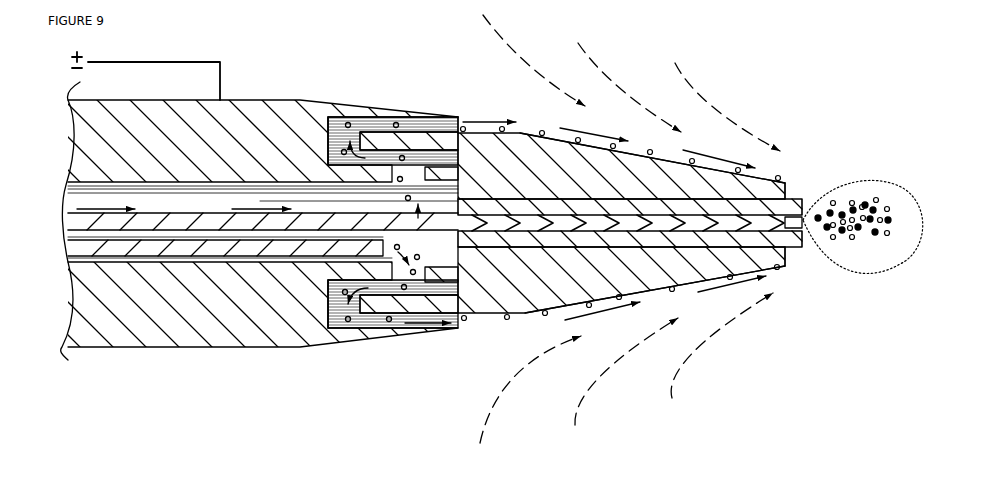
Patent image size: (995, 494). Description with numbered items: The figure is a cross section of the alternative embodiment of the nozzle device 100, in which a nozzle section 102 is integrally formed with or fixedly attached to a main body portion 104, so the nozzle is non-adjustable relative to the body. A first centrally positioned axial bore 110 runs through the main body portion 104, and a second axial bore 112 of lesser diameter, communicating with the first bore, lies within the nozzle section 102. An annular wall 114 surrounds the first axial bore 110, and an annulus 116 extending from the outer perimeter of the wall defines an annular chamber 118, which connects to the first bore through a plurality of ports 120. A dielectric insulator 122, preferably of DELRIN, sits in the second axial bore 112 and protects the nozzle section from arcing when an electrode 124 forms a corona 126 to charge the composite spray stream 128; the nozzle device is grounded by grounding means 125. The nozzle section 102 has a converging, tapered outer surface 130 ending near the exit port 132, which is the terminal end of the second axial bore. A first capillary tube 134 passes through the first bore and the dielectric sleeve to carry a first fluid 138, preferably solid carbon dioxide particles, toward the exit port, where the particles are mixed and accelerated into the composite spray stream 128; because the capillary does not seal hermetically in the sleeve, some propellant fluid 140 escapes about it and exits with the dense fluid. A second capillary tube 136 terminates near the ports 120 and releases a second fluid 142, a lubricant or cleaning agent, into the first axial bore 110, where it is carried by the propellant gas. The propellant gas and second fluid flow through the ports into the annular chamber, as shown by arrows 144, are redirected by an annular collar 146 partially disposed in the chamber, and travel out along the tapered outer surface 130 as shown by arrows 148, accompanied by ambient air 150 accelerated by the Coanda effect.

The nozzle device 100 is at (281, 68).
The nozzle section 102 is at (557, 134).
The main body portion 104 is at (217, 350).
The first axial bore 110 is at (66, 192).
The second axial bore 112 is at (676, 205).
The annular wall 114 is at (298, 98).
The annulus 116 is at (405, 111).
The annular chamber 118 is at (335, 150).
The ports 120 is at (412, 173).
The dielectric insulator 122 is at (802, 198).
The electrode 124 is at (795, 232).
The grounding means 125 is at (147, 62).
The corona 126 is at (885, 272).
The composite spray stream 128 is at (863, 195).
The outer surface 130 is at (655, 290).
The exit port 132 is at (805, 225).
The first capillary tube 134 is at (61, 212).
The second capillary tube 136 is at (70, 263).
The first fluid 138 is at (60, 226).
The propellant fluid 140 is at (59, 205).
The second fluid 142 is at (63, 251).
The arrows 144 is at (400, 256).
The annular collar 146 is at (394, 149).
The arrows 148 is at (575, 127).
The ambient air 150 is at (513, 50).